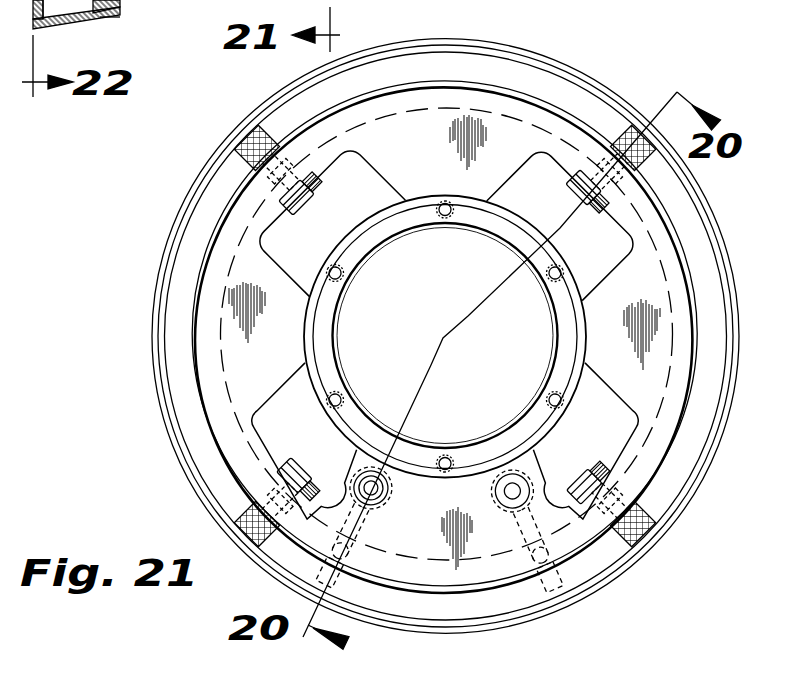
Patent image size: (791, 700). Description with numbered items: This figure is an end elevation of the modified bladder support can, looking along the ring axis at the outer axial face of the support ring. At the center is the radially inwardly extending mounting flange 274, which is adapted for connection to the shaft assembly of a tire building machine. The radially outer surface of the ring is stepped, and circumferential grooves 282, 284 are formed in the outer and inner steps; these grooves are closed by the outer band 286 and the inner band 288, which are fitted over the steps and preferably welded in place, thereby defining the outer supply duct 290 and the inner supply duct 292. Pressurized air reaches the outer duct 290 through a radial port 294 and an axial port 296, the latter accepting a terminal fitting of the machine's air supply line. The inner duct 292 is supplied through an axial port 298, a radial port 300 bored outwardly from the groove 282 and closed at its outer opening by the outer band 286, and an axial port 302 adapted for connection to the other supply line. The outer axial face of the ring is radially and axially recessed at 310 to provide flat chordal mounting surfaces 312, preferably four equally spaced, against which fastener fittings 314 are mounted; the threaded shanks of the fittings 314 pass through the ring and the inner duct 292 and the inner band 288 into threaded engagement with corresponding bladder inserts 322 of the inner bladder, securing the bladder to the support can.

The mounting flange 274 is at (368, 240).
The circumferential groove 282 is at (122, 12).
The circumferential groove 284 is at (388, 116).
The outer band 286 is at (494, 41).
The inner band 288 is at (545, 100).
The outer supply duct 290 is at (84, 22).
The inner supply duct 292 is at (183, 0).
The radial port 294 is at (370, 510).
The axial port 296 is at (373, 470).
The axial port 298 is at (528, 578).
The radial port 300 is at (497, 508).
The axial port 302 is at (517, 476).
The recess 310 is at (268, 250).
The flat chordal mounting surface 312 is at (335, 160).
The fastener fitting 314 is at (576, 198).
The bladder insert 322 is at (248, 128).